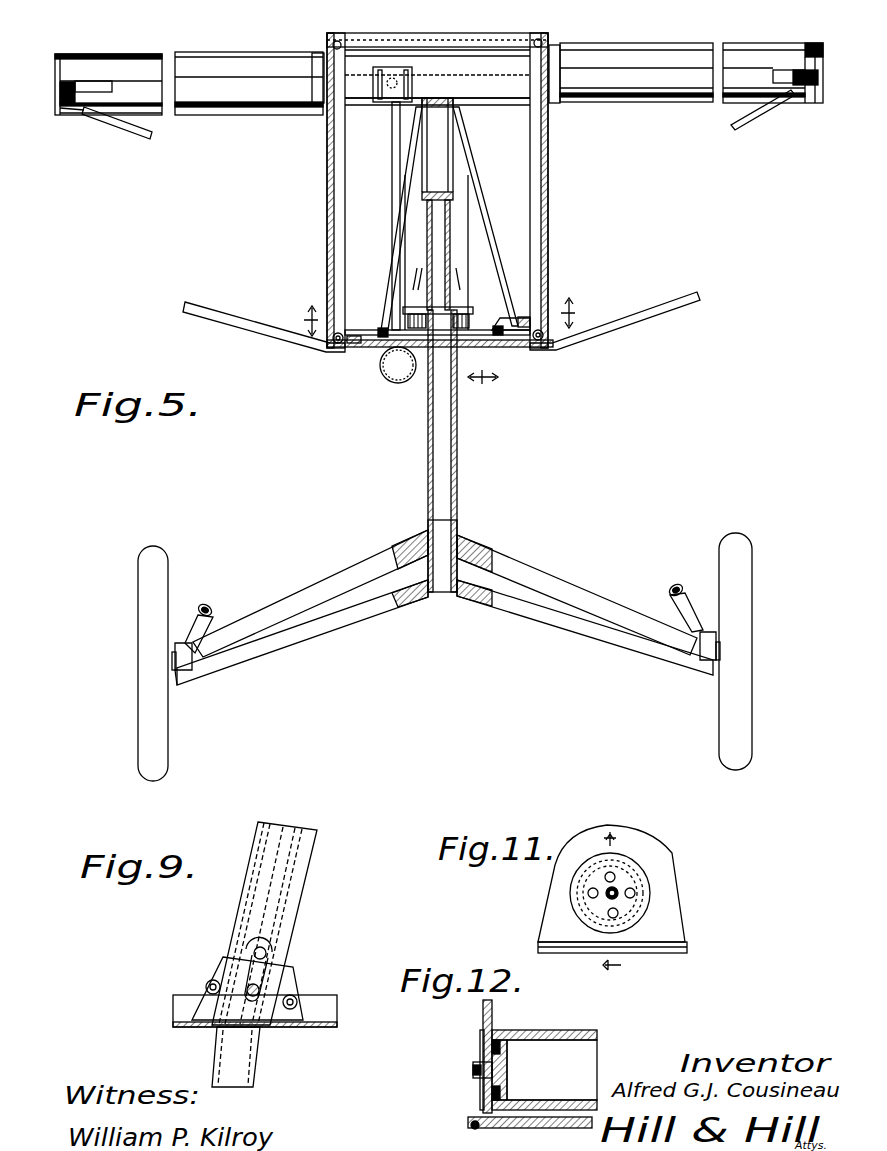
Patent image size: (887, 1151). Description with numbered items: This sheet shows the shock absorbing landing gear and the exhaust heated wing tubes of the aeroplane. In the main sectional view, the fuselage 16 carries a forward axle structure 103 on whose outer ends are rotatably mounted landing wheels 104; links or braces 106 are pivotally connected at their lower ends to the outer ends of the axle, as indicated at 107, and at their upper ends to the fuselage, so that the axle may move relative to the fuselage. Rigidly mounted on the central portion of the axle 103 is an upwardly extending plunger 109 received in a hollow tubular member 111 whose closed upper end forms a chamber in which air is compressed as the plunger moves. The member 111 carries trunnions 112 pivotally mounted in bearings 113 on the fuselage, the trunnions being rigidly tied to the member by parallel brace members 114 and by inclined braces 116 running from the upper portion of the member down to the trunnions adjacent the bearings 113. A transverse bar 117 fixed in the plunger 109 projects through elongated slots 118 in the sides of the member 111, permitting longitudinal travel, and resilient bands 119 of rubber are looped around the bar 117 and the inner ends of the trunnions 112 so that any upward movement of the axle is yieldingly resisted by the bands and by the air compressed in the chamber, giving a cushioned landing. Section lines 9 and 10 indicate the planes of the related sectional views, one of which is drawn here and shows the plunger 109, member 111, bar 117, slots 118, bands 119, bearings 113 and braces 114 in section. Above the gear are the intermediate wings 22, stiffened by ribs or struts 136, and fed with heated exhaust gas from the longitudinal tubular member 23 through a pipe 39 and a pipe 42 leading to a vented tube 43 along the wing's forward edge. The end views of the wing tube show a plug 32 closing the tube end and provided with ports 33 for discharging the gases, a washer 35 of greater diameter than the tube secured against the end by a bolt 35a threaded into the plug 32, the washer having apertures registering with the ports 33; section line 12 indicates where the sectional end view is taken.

In FIG. 5, the fuselage 16 is at (546, 188).
In FIG. 5, the intermediate wings 22 is at (228, 52).
In FIG. 5, the ribs or struts 136 is at (312, 62).
In FIG. 11, the ribs or struts 136 is at (642, 846).
In FIG. 12, the ribs or struts 136 is at (493, 1020).
In FIG. 5, the washer 35 is at (62, 75).
In FIG. 11, the washer 35 is at (566, 878).
In FIG. 12, the washer 35 is at (482, 1028).
In FIG. 5, the ports 33 is at (72, 88).
In FIG. 11, the ports 33 is at (595, 888).
In FIG. 12, the ports 33 is at (496, 1048).
In FIG. 5, the plugs or closure members 32 is at (440, 79).
In FIG. 11, the plugs or closure members 32 is at (638, 880).
In FIG. 12, the plugs or closure members 32 is at (507, 1060).
In FIG. 5, the bolt 35a is at (60, 98).
In FIG. 11, the bolt 35a is at (612, 896).
In FIG. 12, the bolt 35a is at (473, 1068).
In FIG. 5, the pipe 42 is at (410, 76).
In FIG. 5, the vented tube 43 is at (478, 82).
In FIG. 11, the vented tube 43 is at (640, 866).
In FIG. 12, the vented tube 43 is at (580, 1030).
In FIG. 5, the pipe 39 is at (392, 136).
In FIG. 5, the hollow tubular member 111 is at (453, 170).
In FIG. 9, the hollow tubular member 111 is at (312, 866).
In FIG. 5, the inclined braces 116 is at (405, 168).
In FIG. 5, the elongated slots 118 is at (428, 228).
In FIG. 9, the elongated slots 118 is at (283, 896).
In FIG. 5, the transverse bar 117 is at (446, 300).
In FIG. 9, the transverse bar 117 is at (266, 954).
In FIG. 5, the resilient bands 119 is at (466, 300).
In FIG. 9, the resilient bands 119 is at (250, 947).
In FIG. 5, the trunnions 112 is at (360, 328).
In FIG. 9, the trunnions 112 is at (262, 985).
In FIG. 5, the bearings 113 is at (348, 326).
In FIG. 9, the bearings 113 is at (222, 965).
In FIG. 5, the brace members 114 is at (354, 347).
In FIG. 9, the brace members 114 is at (207, 982).
In FIG. 5, the section line 10 is at (438, 317).
In FIG. 5, the section line 9 is at (483, 384).
In FIG. 11, the section line 12 is at (616, 903).
In FIG. 5, the tubular member 23 is at (380, 376).
In FIG. 5, the plunger 109 is at (428, 405).
In FIG. 9, the plunger 109 is at (248, 1068).
In FIG. 5, the axle structure 103 is at (552, 570).
In FIG. 5, the landing wheels 104 is at (160, 550).
In FIG. 5, the links or braces 106 is at (207, 604).
In FIG. 5, the pivotal connection 107 is at (210, 664).